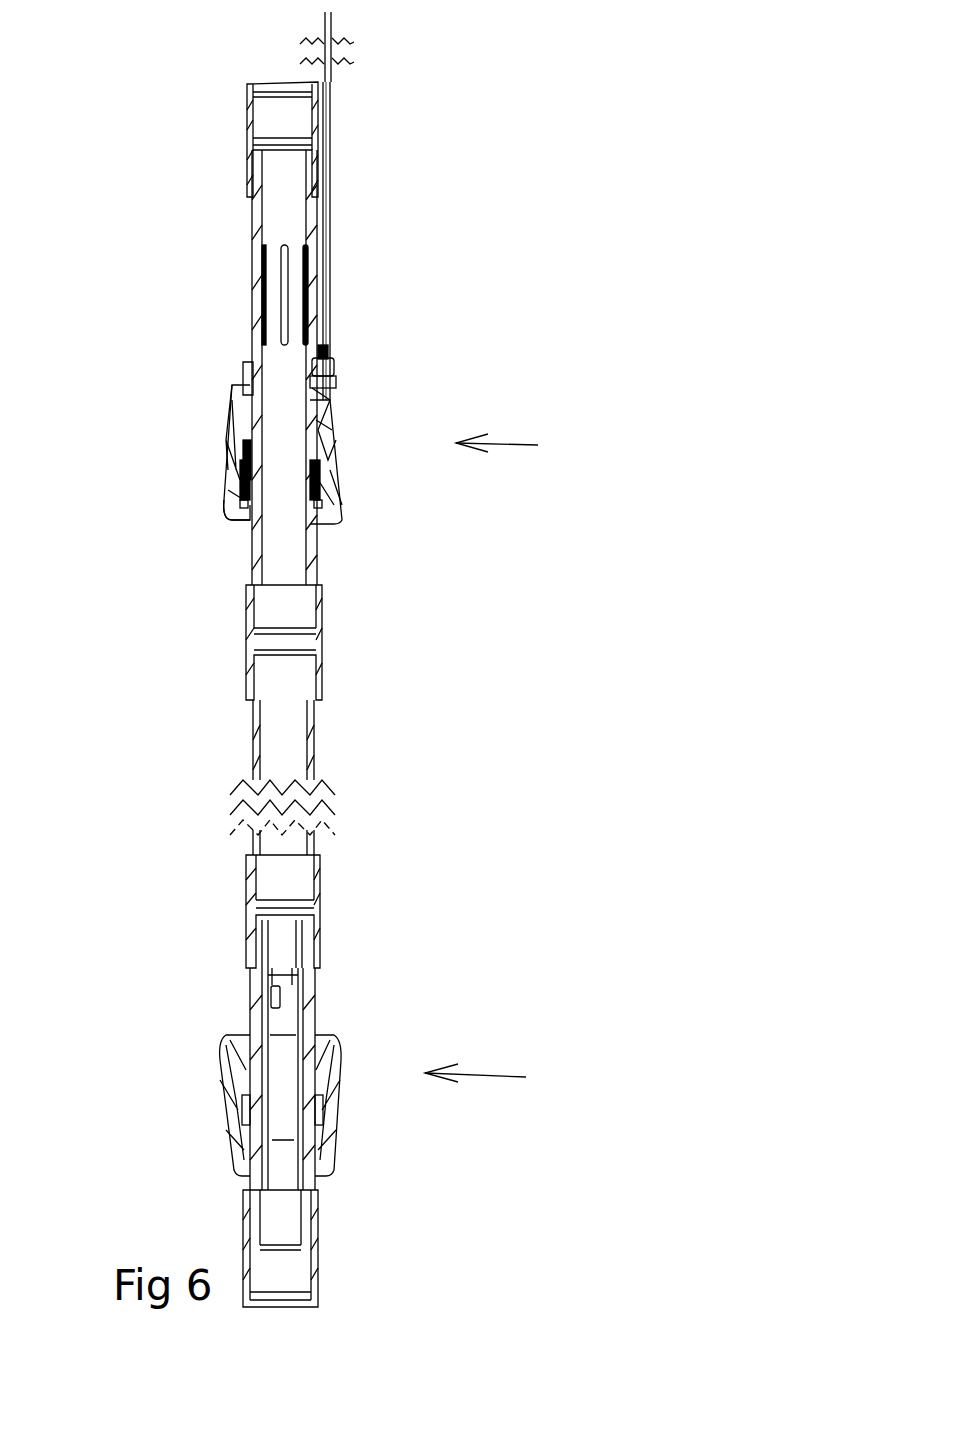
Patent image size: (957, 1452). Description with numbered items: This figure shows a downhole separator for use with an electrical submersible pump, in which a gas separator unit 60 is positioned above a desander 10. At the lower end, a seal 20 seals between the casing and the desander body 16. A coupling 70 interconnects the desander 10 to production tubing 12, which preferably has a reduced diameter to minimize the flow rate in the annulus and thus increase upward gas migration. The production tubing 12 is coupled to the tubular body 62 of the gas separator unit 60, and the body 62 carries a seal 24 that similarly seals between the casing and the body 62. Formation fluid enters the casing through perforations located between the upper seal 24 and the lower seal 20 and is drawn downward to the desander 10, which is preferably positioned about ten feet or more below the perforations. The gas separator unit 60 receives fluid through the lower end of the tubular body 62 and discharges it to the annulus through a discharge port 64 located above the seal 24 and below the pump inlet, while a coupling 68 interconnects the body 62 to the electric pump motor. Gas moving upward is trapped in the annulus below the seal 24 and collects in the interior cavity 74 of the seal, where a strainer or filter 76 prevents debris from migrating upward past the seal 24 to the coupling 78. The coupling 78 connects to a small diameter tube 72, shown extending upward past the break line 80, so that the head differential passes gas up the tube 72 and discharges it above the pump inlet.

The desander 10 is at (499, 1079).
The production tubing 12 is at (312, 752).
The desander body 16 is at (250, 987).
The seal 20 is at (325, 1120).
The seal 24 is at (337, 505).
The gas separator unit 60 is at (519, 445).
The tubular body 62 is at (312, 563).
The discharge port 64 is at (285, 285).
The coupling 68 is at (248, 124).
The coupling 70 is at (318, 908).
The small diameter tube 72 is at (327, 214).
The interior cavity 74 is at (240, 517).
The strainer or filter 76 is at (246, 473).
The coupling 78 is at (331, 357).
The wire 80 is at (332, 12).